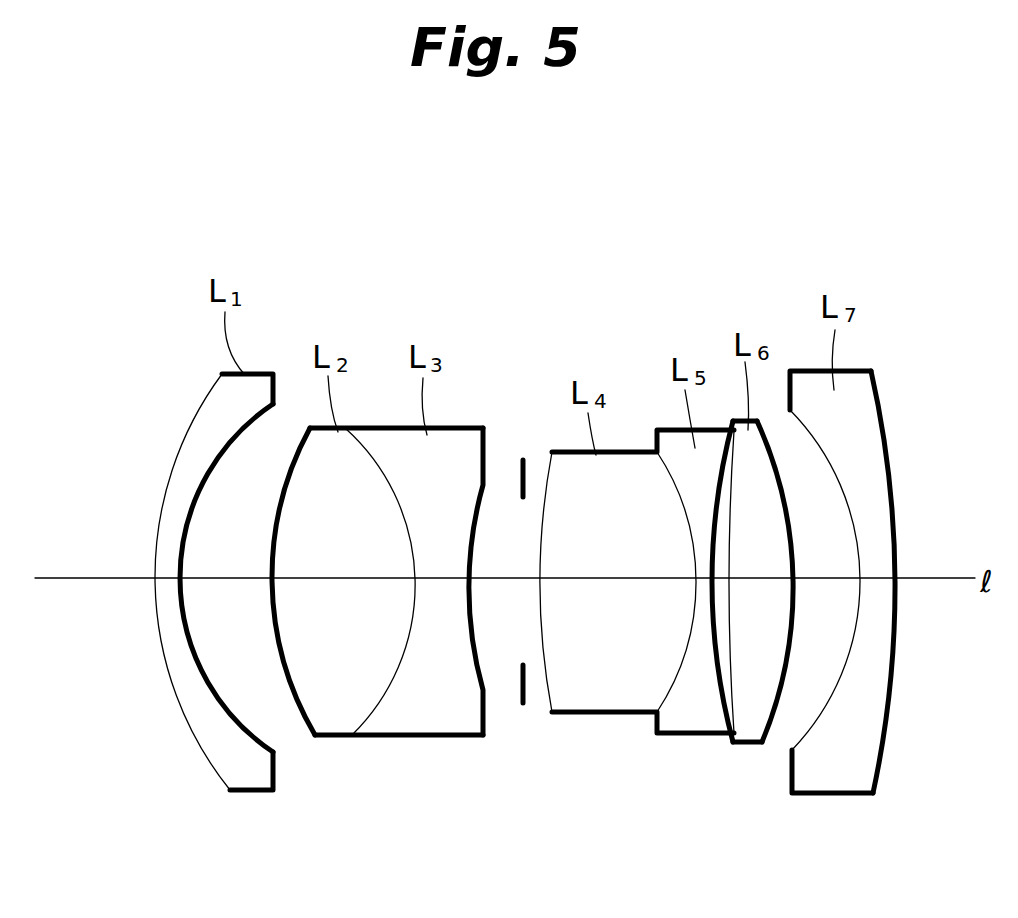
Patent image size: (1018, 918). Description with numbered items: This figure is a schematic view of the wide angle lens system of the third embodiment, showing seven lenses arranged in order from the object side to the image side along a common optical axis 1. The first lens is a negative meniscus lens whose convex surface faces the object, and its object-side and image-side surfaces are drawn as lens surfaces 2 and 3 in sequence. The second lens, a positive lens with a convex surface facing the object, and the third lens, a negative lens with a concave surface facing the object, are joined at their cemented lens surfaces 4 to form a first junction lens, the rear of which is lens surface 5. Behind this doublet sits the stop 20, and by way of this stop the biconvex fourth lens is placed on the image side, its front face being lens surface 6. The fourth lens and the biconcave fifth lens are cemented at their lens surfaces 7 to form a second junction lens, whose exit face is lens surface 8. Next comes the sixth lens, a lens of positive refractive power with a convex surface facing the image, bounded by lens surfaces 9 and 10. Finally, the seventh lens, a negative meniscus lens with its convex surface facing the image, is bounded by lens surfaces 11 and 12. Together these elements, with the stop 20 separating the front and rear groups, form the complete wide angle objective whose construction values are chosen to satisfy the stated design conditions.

The optical axis 1 is at (192, 735).
The rear surface of first lens L1 2 is at (203, 665).
The front surface of second lens L2 3 is at (283, 658).
The lens surfaces 4 is at (376, 712).
The rear surface of third lens L3 5 is at (487, 712).
The front surface of fourth lens L4 6 is at (545, 705).
The lens surfaces 7 is at (662, 686).
The rear surface of fifth lens L5 8 is at (717, 700).
The front surface of sixth lens L6 9 is at (747, 697).
The rear surface of sixth lens L6 10 is at (776, 723).
The front surface of seventh lens L7 11 is at (838, 683).
The rear surface of seventh lens L7 12 is at (888, 725).
The stop 20 is at (532, 458).